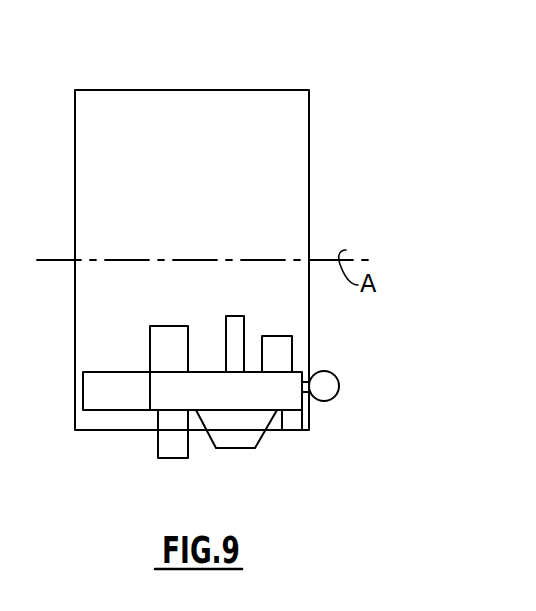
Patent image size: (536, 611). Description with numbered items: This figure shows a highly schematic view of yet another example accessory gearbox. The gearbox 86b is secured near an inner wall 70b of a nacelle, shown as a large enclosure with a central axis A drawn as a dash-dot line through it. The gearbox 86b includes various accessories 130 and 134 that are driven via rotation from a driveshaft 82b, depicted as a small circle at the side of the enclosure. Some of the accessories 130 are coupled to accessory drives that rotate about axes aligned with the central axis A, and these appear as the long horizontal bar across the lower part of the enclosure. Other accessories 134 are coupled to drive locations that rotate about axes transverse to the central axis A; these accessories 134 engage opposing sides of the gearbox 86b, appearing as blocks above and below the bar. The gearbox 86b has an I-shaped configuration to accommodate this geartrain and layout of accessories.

The inner wall 70b is at (132, 89).
The accessories 130 is at (123, 393).
The accessories 134 is at (280, 342).
The driveshaft 82b is at (333, 385).
The gearbox 86b is at (295, 401).